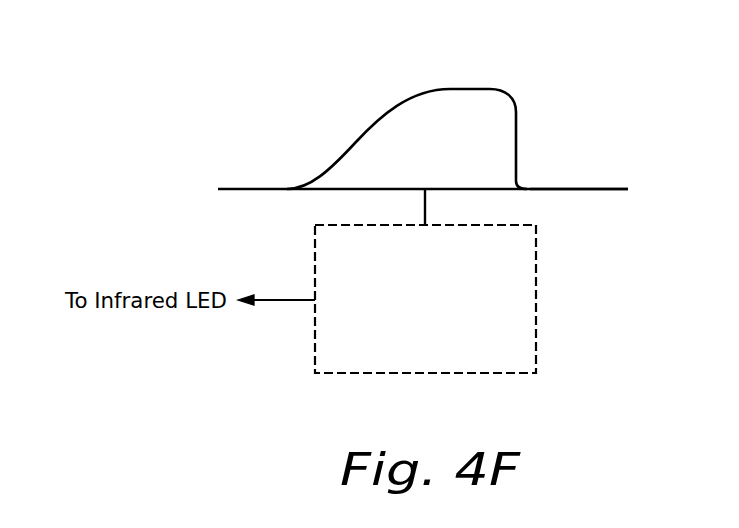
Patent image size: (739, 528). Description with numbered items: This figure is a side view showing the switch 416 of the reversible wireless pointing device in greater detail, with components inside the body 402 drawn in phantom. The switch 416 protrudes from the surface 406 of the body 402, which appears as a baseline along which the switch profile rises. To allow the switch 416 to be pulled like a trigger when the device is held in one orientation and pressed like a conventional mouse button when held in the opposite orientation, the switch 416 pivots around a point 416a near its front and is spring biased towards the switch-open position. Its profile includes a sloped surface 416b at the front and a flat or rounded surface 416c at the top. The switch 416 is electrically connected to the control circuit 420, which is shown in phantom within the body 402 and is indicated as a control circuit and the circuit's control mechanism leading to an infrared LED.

The body 402 is at (263, 232).
The surface 406 is at (568, 189).
The switch 416 is at (411, 96).
The pivot point 416a is at (295, 147).
The sloped surface 416b is at (375, 128).
The flat or rounded surface 416c is at (475, 89).
The control circuit 420 is at (537, 250).